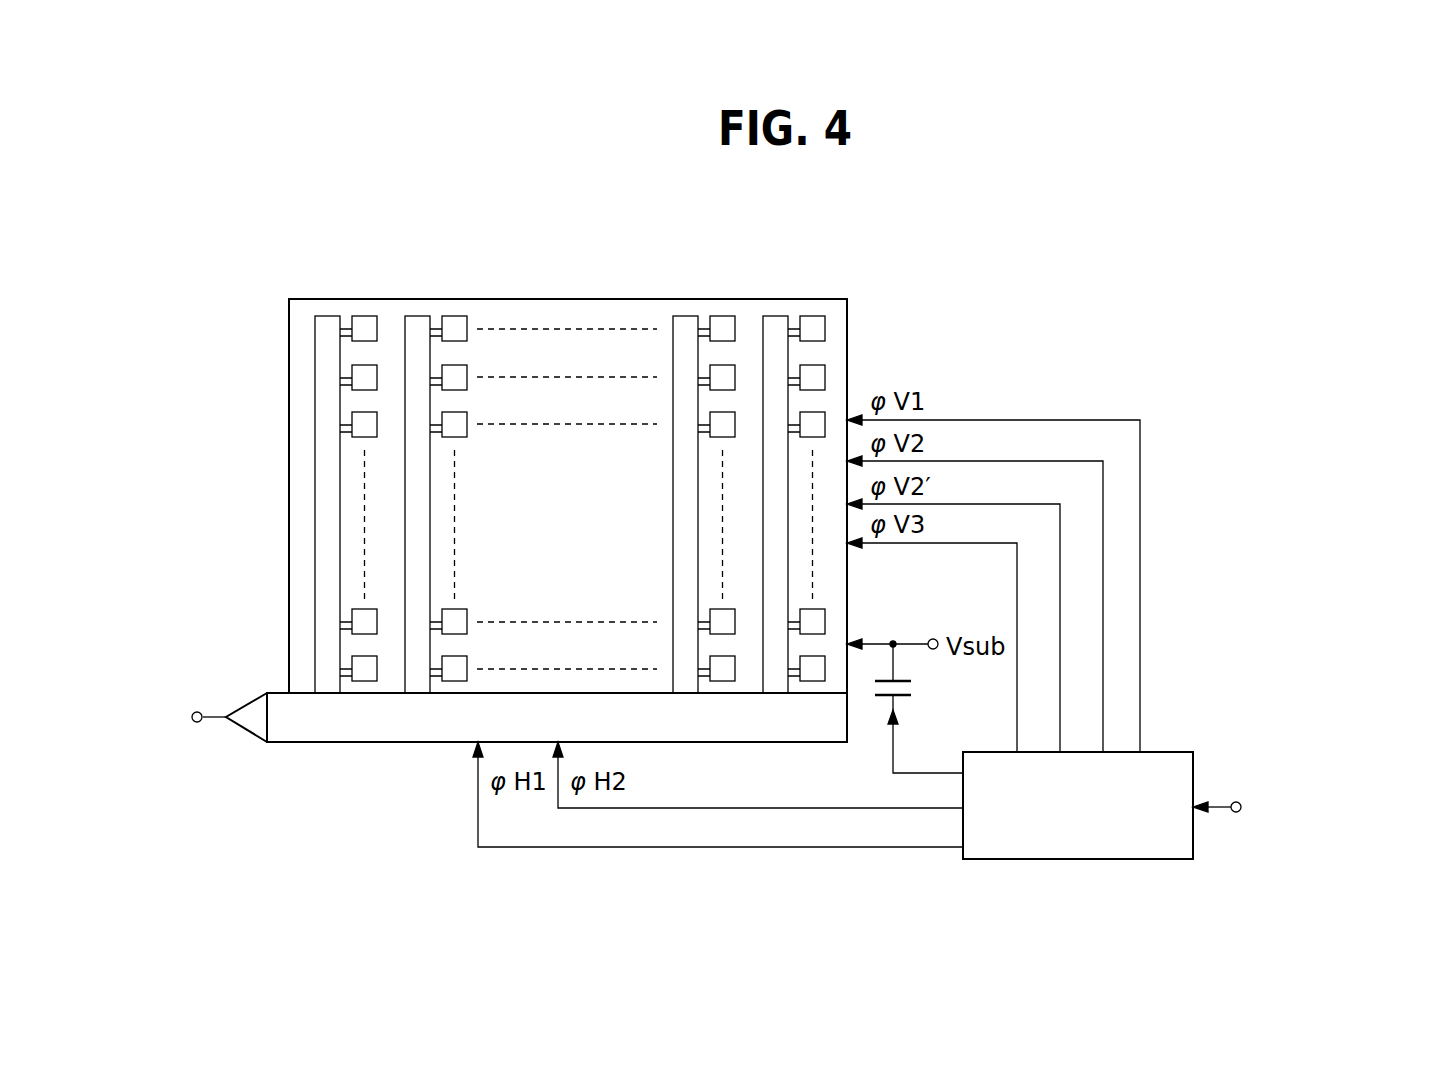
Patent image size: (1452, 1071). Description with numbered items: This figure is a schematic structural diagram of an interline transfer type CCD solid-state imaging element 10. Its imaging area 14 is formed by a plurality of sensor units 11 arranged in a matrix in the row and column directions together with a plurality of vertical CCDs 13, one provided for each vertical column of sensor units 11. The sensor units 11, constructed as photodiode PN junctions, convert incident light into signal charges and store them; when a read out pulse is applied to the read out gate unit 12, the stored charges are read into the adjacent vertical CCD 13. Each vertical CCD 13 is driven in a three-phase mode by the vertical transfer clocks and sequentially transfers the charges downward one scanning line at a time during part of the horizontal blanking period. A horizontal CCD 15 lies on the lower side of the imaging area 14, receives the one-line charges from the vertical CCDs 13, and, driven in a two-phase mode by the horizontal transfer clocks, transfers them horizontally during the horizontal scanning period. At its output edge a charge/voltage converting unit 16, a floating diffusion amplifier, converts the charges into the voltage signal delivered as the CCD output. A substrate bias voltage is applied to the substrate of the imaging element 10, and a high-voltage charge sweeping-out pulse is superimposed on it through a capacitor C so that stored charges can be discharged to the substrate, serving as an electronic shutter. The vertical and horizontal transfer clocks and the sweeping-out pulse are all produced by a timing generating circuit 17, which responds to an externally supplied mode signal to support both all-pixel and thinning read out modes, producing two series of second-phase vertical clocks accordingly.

The CCD solid-state imaging element 10 is at (927, 313).
The sensor unit 11 is at (365, 325).
The read out gate unit 12 is at (437, 335).
The vertical CCD 13 is at (686, 330).
The imaging area 14 is at (492, 510).
The horizontal CCD 15 is at (702, 725).
The charge/voltage converting unit 16 is at (255, 716).
The timing generating circuit 17 is at (1196, 770).
The capacitor C is at (912, 688).